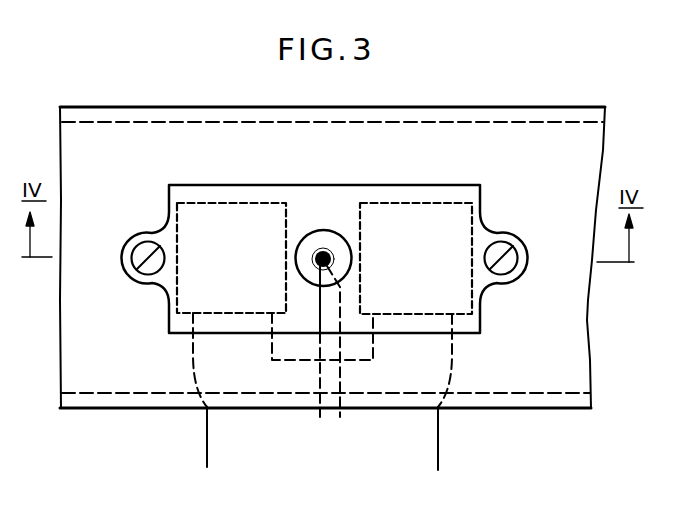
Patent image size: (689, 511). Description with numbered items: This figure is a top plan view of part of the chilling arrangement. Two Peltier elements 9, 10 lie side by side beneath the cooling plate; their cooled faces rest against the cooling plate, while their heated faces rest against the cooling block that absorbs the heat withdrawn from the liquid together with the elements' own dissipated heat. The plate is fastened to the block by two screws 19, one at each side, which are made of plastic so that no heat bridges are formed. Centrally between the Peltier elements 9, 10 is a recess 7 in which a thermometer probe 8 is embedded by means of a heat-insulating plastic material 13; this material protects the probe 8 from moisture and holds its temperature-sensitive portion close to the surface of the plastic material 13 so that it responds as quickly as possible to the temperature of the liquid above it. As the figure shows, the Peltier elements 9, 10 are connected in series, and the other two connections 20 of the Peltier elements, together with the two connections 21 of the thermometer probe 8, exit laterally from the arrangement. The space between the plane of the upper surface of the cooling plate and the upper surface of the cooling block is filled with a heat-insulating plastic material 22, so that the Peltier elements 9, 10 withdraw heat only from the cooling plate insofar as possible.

The recess 7 is at (298, 258).
The thermometer probe 8 is at (326, 255).
The Peltier element 9 is at (225, 226).
The Peltier element 10 is at (425, 242).
The heat-insulating plastic material 13 is at (337, 247).
The screws 19 is at (140, 253).
The connections 20 is at (203, 447).
The connections 21 is at (340, 417).
The heat-insulating plastic material 22 is at (543, 360).